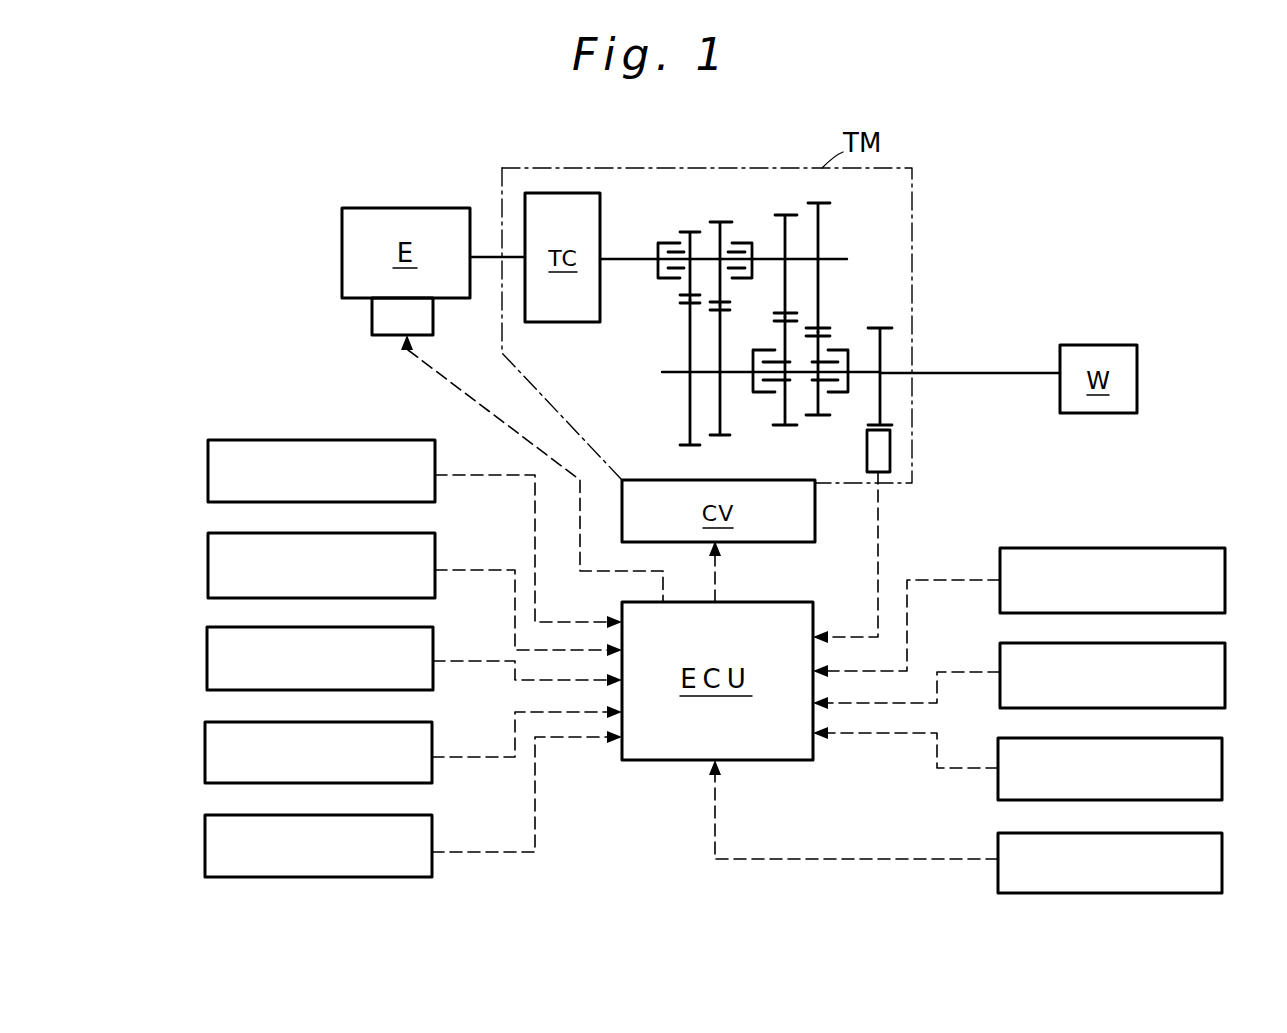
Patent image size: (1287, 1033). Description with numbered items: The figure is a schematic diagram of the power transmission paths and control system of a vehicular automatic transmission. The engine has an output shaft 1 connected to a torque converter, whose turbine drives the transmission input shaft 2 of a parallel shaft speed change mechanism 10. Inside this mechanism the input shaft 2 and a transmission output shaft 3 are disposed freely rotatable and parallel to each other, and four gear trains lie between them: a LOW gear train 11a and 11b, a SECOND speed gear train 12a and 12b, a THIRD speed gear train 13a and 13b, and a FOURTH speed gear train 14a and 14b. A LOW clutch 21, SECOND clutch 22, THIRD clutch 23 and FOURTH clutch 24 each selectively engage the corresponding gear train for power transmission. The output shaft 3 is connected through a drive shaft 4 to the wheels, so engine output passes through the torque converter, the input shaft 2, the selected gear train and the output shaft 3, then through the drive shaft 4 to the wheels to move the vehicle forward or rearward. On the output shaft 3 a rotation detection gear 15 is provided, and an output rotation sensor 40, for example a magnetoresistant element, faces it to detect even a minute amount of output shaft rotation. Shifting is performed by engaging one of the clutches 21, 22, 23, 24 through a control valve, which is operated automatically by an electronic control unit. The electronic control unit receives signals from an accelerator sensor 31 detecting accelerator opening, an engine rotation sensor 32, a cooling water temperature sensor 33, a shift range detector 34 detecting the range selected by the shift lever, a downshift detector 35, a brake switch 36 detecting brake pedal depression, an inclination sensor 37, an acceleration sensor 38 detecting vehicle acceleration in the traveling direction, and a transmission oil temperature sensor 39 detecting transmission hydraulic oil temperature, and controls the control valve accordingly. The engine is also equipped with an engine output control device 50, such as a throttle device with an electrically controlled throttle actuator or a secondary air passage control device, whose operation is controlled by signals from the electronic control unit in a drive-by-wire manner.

The output shaft 1 is at (488, 252).
The transmission input shaft 2 is at (640, 258).
The transmission output shaft 3 is at (662, 373).
The drive shaft 4 is at (975, 373).
The parallel shaft speed change mechanism 10 is at (861, 243).
The LOW gear train drive gear 11a is at (683, 236).
The LOW gear train driven gear 11b is at (688, 446).
The SECOND speed gear train drive gear 12a is at (719, 223).
The SECOND speed gear train driven gear 12b is at (722, 440).
The THIRD speed gear train drive gear 13a is at (782, 213).
The THIRD speed gear train driven gear 13b is at (785, 430).
The FOURTH speed gear train drive gear 14a is at (826, 208).
The FOURTH speed gear train driven gear 14b is at (820, 418).
The rotation detection gear 15 is at (888, 330).
The LOW clutch 21 is at (668, 278).
The SECOND clutch 22 is at (728, 253).
The THIRD clutch 23 is at (757, 385).
The FOURTH clutch 24 is at (835, 352).
The accelerator sensor 31 is at (208, 452).
The engine rotation sensor 32 is at (223, 532).
The cooling water temperature sensor 33 is at (207, 658).
The shift range detector 34 is at (225, 721).
The downshift detector 35 is at (225, 814).
The brake switch 36 is at (1226, 580).
The inclination sensor 37 is at (1226, 668).
The acceleration sensor 38 is at (1223, 770).
The T/M oil temperature sensor 39 is at (1223, 863).
The output rotation sensor 40 is at (892, 460).
The engine output control device 50 is at (372, 322).